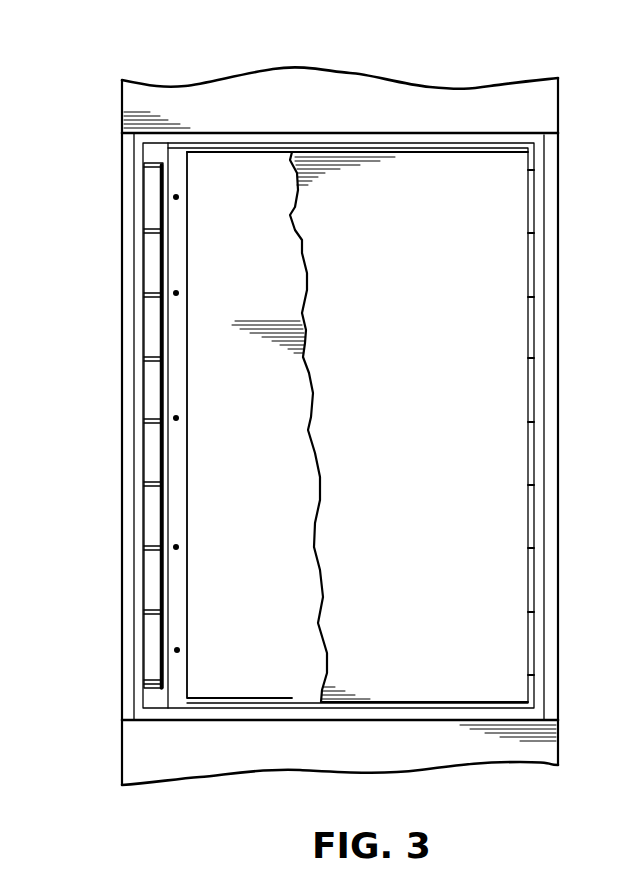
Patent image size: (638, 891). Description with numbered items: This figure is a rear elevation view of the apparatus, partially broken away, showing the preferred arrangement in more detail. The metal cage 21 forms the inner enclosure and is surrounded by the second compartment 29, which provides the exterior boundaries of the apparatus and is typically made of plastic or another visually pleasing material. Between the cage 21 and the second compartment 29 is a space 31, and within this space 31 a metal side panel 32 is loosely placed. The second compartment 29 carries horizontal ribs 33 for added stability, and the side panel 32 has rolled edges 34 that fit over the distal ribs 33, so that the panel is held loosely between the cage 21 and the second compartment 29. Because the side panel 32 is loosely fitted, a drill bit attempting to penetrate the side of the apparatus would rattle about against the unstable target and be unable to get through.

The metal cage 21 is at (232, 152).
The second compartment 29 is at (130, 699).
The space 31 is at (153, 153).
The metal side panel 32 is at (155, 409).
The horizontal ribs 33 is at (153, 228).
The rolled edges 34 is at (162, 166).